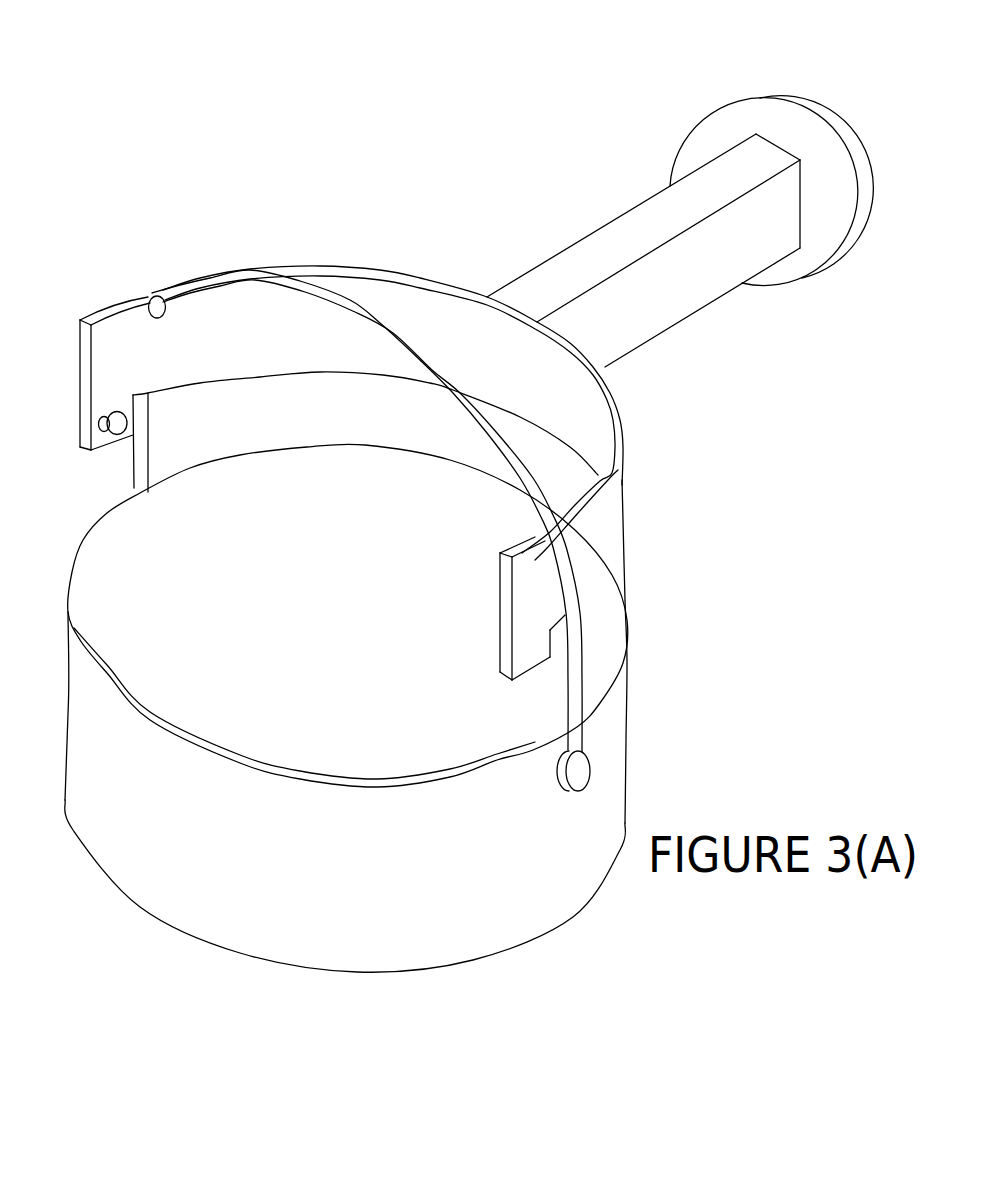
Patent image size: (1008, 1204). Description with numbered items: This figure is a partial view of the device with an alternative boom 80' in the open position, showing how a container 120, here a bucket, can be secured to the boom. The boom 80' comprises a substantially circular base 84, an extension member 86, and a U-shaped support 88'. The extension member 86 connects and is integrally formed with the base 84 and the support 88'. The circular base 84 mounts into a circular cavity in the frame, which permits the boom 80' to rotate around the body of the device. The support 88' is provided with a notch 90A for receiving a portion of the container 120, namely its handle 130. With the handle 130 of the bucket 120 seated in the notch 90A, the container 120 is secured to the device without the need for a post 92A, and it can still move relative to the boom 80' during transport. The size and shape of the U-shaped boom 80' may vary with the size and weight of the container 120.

The boom 80' is at (437, 48).
The base 84 is at (828, 120).
The extension member 86 is at (613, 229).
The U-shaped support 88' is at (378, 378).
The notch 90A is at (148, 300).
The post 92A is at (118, 437).
The container 120 is at (346, 641).
The handle 130 is at (443, 393).